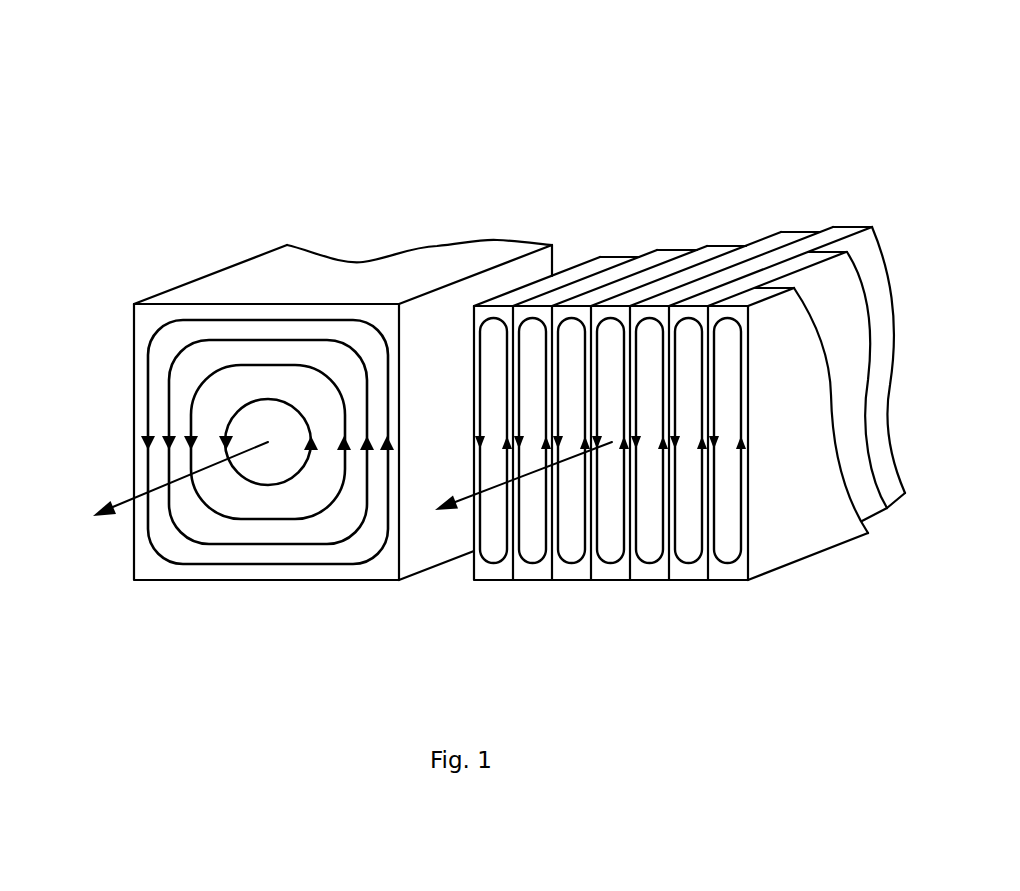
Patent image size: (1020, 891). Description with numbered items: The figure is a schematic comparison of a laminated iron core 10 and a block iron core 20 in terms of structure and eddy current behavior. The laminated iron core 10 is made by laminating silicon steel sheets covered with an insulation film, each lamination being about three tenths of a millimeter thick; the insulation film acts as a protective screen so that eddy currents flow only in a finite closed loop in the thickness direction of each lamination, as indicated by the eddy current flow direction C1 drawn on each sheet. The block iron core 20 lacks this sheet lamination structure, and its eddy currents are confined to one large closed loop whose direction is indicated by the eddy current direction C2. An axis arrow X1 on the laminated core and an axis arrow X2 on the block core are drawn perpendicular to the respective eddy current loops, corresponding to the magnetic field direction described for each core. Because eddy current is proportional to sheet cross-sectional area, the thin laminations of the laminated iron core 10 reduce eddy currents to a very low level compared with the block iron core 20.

The laminated iron core 10 is at (666, 328).
The block iron core 20 is at (294, 310).
The eddy current flow direction C1 is at (743, 543).
The eddy current direction C2 is at (143, 377).
The axis / flux direction of laminated core X1 is at (519, 476).
The axis / flux direction of solid block X2 is at (176, 479).